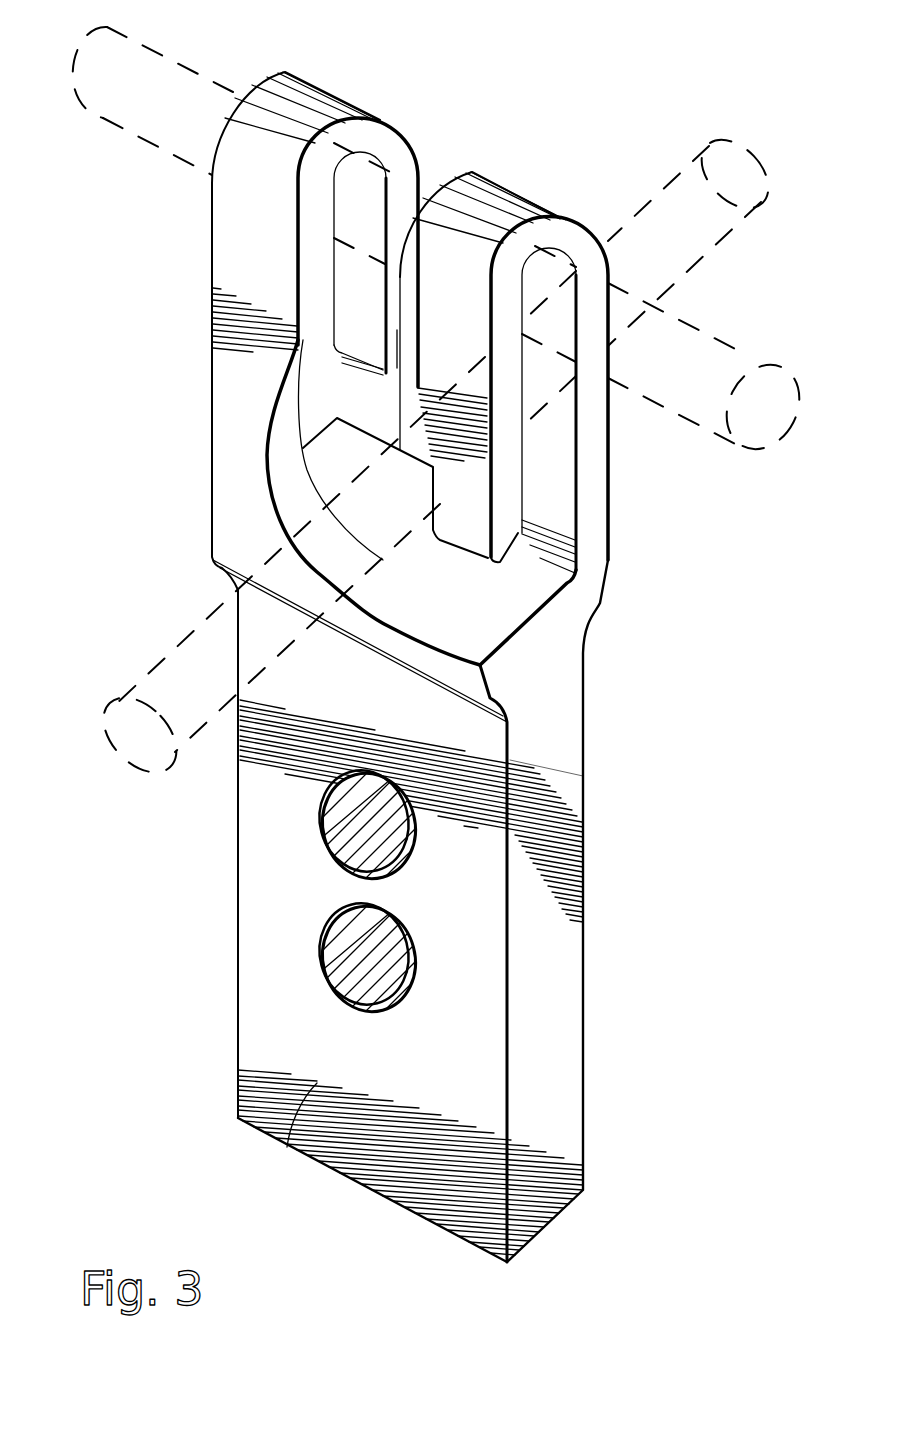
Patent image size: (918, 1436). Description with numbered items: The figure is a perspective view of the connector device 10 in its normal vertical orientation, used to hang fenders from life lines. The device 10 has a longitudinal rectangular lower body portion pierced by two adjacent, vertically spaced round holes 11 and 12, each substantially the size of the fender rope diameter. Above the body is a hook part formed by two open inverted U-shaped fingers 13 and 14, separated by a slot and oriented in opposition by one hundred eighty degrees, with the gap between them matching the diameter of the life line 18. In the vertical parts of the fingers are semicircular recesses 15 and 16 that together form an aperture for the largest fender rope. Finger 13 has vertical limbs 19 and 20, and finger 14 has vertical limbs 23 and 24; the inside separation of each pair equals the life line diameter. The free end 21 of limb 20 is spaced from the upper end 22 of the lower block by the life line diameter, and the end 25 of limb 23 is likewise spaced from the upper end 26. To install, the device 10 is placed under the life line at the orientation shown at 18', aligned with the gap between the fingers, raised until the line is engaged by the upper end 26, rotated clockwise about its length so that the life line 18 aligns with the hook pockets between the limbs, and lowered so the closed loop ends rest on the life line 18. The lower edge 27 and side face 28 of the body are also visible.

The connector device 10 is at (402, 1208).
The round hole 11 is at (412, 983).
The round hole 12 is at (418, 825).
The finger 13 is at (532, 193).
The finger 14 is at (317, 83).
The semicircular recess 15 is at (267, 473).
The semicircular recess 16 is at (407, 454).
The life line 18 is at (443, 285).
The life line at installation orientation 18' is at (452, 402).
The vertical limb 19 is at (611, 324).
The vertical limb 20 is at (480, 277).
The free end 21 is at (457, 548).
The upper end of rectangular lower block 22 is at (400, 617).
The vertical limb 23 is at (420, 157).
The vertical limb 24 is at (290, 173).
The end of vertical limb 25 is at (357, 363).
The upper end of connector body 26 is at (367, 432).
The lower edge region 27 is at (410, 1152).
The side face 28 is at (585, 858).